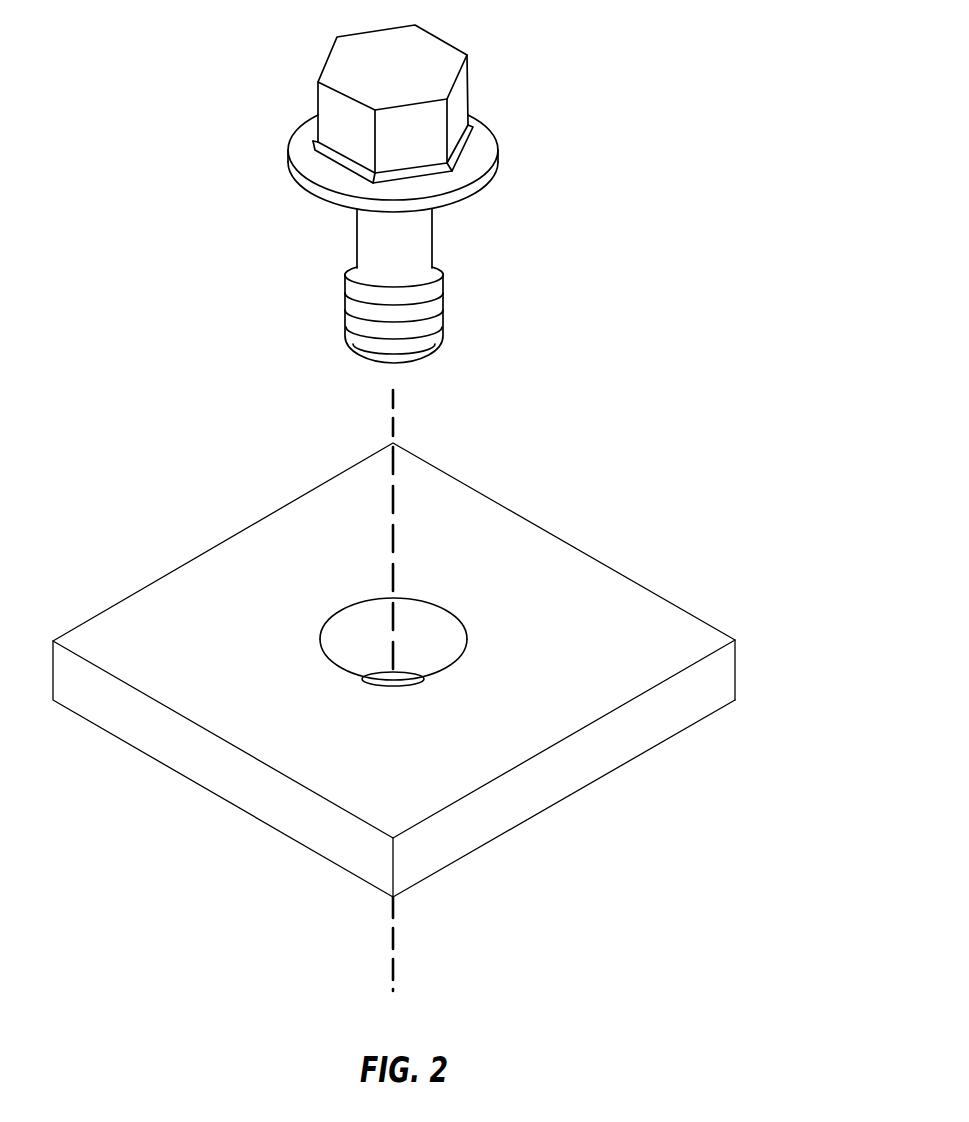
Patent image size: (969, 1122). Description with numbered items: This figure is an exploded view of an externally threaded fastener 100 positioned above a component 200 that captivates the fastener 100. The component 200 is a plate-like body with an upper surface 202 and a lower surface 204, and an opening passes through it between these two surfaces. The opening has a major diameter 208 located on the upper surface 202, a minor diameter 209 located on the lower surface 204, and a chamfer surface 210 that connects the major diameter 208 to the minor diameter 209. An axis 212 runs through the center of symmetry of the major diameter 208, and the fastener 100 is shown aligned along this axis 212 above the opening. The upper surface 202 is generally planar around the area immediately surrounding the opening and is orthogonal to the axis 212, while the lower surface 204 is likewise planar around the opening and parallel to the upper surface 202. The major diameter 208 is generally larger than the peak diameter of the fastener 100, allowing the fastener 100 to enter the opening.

The externally threaded fastener 100 is at (560, 69).
The component 200 is at (417, 660).
The upper surface 202 is at (500, 530).
The lower surface 204 is at (141, 795).
The major diameter 208 is at (467, 640).
The minor diameter 209 is at (415, 679).
The chamfer surface 210 is at (350, 637).
The axis 212 is at (393, 398).